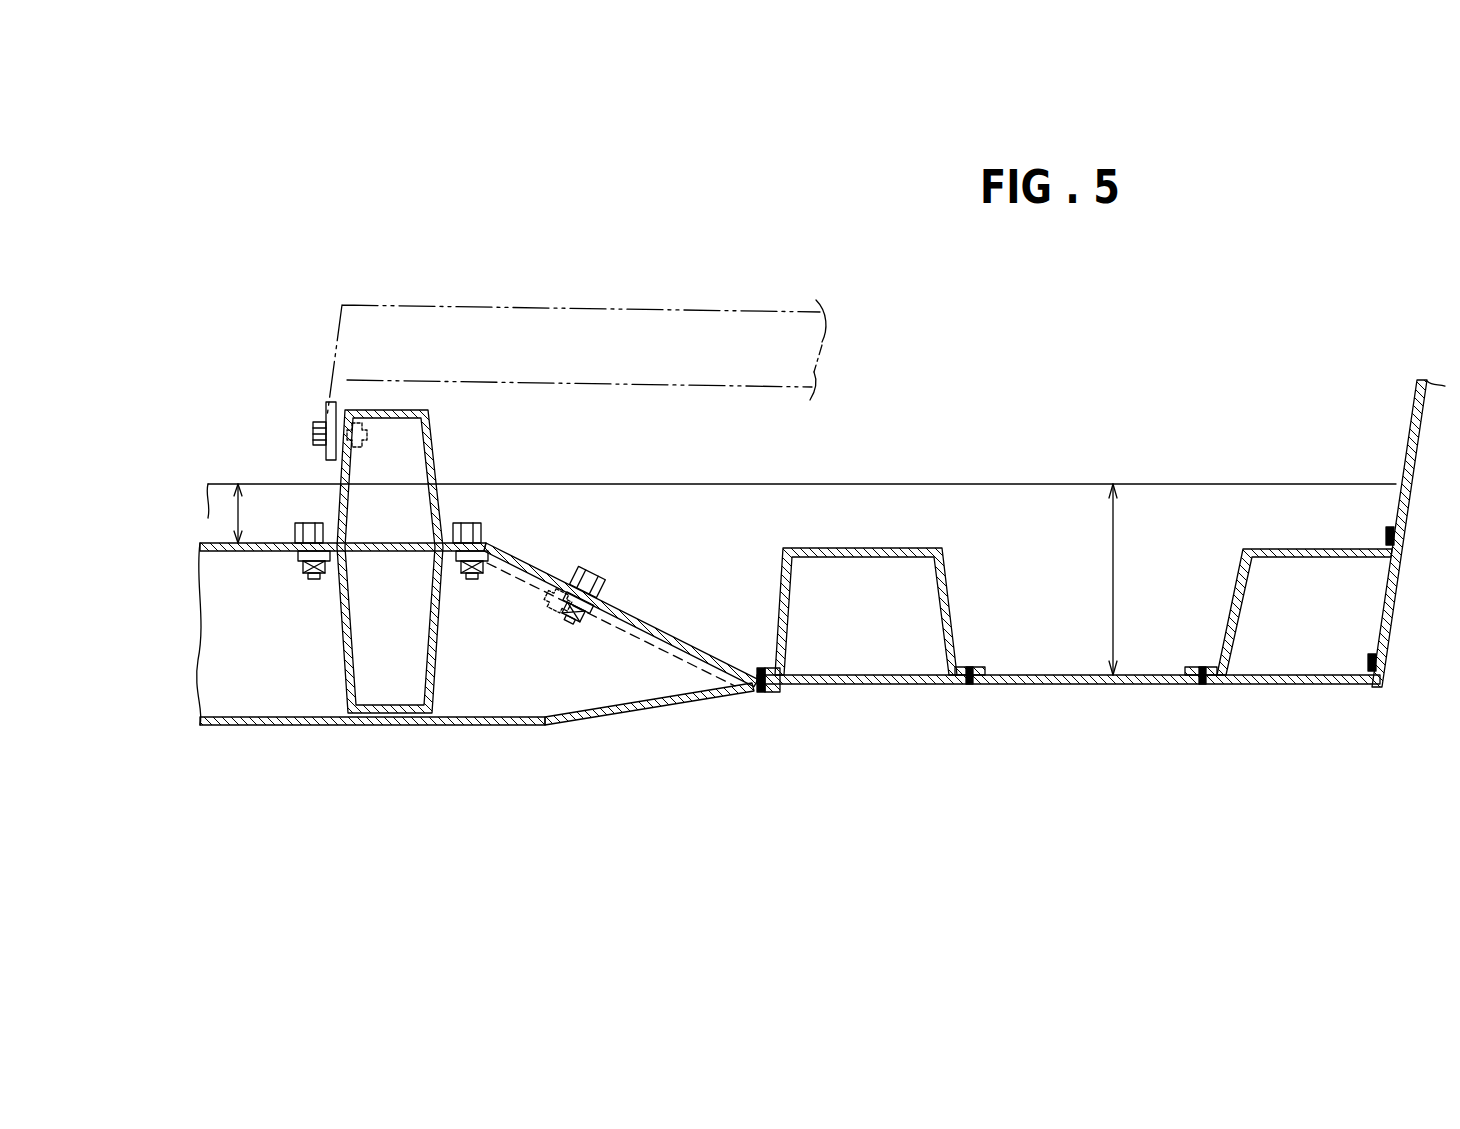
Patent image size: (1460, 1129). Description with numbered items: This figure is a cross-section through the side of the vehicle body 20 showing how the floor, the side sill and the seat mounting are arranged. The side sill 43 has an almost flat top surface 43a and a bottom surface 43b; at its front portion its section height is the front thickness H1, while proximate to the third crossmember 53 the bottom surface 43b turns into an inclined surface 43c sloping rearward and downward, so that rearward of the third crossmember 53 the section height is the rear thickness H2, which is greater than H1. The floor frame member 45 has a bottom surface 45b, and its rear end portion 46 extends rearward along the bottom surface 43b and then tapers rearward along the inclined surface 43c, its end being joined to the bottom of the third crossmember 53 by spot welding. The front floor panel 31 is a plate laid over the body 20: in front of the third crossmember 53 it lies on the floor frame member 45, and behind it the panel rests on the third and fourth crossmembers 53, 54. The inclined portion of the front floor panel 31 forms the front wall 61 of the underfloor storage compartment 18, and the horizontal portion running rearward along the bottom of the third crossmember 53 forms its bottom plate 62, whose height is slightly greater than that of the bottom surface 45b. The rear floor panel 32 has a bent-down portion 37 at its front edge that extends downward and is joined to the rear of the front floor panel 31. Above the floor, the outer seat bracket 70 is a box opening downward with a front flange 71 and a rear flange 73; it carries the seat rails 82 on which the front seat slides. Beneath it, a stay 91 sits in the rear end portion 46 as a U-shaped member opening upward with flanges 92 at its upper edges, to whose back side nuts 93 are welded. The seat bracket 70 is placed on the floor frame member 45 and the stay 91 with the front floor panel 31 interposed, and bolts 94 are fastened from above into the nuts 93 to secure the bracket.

The body 20 is at (293, 275).
The outer seat bracket 70 is at (400, 408).
The seat rail 82 is at (677, 305).
The front flange 71 is at (283, 543).
The bolt 94 is at (307, 523).
The rear flange 73 is at (572, 566).
The inclined surface 43c is at (619, 621).
The side sill 43 is at (780, 508).
The top surface 43a is at (868, 486).
The third crossmember 53 is at (913, 547).
The underfloor storage compartment 18 is at (1034, 606).
The fourth crossmember 54 is at (1268, 548).
The rear floor panel 32 is at (1413, 388).
The bent-down portion 37 is at (1408, 435).
The front thickness H1 is at (237, 513).
The bottom surface 43b is at (218, 552).
The floor frame member 45 is at (225, 595).
The bottom surface 45b is at (227, 725).
The flange 92 is at (288, 556).
The nut 93 is at (300, 570).
The stay 91 is at (338, 677).
The rear end portion 46 is at (637, 677).
The front wall 61 is at (693, 648).
The bottom plate 62 is at (1043, 685).
The front floor panel 31 is at (1150, 687).
The rear thickness H2 is at (1139, 579).